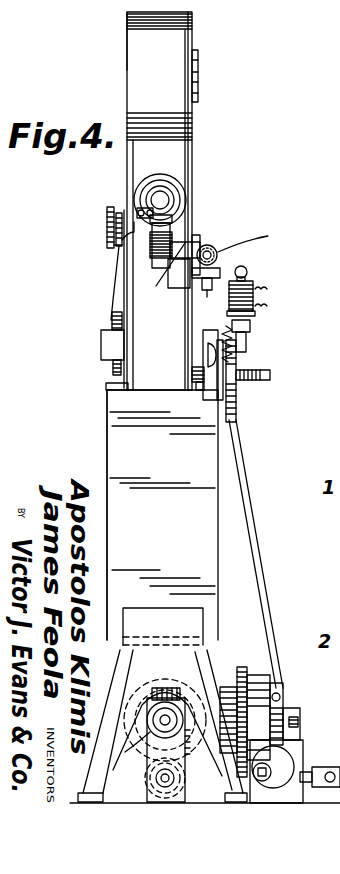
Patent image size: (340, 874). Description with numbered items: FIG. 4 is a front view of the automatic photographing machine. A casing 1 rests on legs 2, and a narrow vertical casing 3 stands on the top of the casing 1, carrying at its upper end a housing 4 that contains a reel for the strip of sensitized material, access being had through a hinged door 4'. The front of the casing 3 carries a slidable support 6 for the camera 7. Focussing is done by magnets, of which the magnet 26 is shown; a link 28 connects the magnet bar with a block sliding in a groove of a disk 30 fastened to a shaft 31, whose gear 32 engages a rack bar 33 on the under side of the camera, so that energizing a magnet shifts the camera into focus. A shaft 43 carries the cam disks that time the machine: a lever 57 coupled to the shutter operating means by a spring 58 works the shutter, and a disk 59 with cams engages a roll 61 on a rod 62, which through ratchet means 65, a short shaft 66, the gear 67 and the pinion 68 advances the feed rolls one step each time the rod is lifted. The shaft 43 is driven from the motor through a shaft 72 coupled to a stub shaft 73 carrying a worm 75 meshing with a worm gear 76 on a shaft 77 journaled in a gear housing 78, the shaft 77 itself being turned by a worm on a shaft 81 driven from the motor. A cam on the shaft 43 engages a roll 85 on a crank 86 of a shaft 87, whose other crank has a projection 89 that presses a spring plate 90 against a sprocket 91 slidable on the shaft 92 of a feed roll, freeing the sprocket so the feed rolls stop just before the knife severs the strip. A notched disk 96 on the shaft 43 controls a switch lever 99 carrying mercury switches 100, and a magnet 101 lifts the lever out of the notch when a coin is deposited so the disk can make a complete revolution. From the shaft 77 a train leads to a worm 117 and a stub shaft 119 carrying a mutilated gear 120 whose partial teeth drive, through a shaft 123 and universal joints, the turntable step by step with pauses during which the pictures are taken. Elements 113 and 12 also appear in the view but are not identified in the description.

The casing 1 is at (117, 441).
The legs 2 is at (125, 660).
The narrow vertical casing 3 is at (149, 398).
The housing 4 is at (184, 201).
The hinged door 4' is at (104, 41).
The slidable support 6 is at (168, 176).
The camera 7 is at (158, 196).
The magnet 26 is at (268, 236).
The link 28 is at (218, 258).
The disk 30 is at (212, 244).
The shaft 31 is at (176, 286).
The gear 32 is at (187, 238).
The rack bar 33 is at (195, 220).
The shaft 43 is at (236, 350).
The lever 57 is at (124, 278).
The spring 58 is at (164, 264).
The disk 59 is at (120, 375).
The roll 61 is at (112, 322).
The rod 62 is at (112, 302).
The ratchet means 65 is at (118, 258).
The short shaft 66 is at (107, 231).
The gear 67 is at (107, 245).
The pinion 68 is at (107, 214).
The shaft 72 is at (258, 545).
The stub shaft 73 is at (283, 698).
The worm 75 is at (299, 720).
The worm gear 76 is at (290, 710).
The shaft 77 is at (266, 724).
The gear housing 78 is at (246, 672).
The shaft 81 is at (275, 758).
The roll 85 is at (205, 338).
The crank 86 is at (206, 355).
The shaft 87 is at (200, 366).
The projection 89 is at (198, 388).
The spring plate 90 is at (220, 395).
The sprocket 91 is at (236, 385).
The shaft 92 is at (270, 375).
The disk 96 is at (248, 340).
The switch lever 99 is at (250, 326).
The mercury switches 100 is at (247, 274).
The magnet 101 is at (256, 300).
The pin 113 is at (224, 282).
The worm 117 is at (163, 692).
The stub shaft 119 is at (158, 740).
The mutilated gear 120 is at (215, 750).
The shaft 123 is at (176, 786).
The motor 12 is at (320, 764).